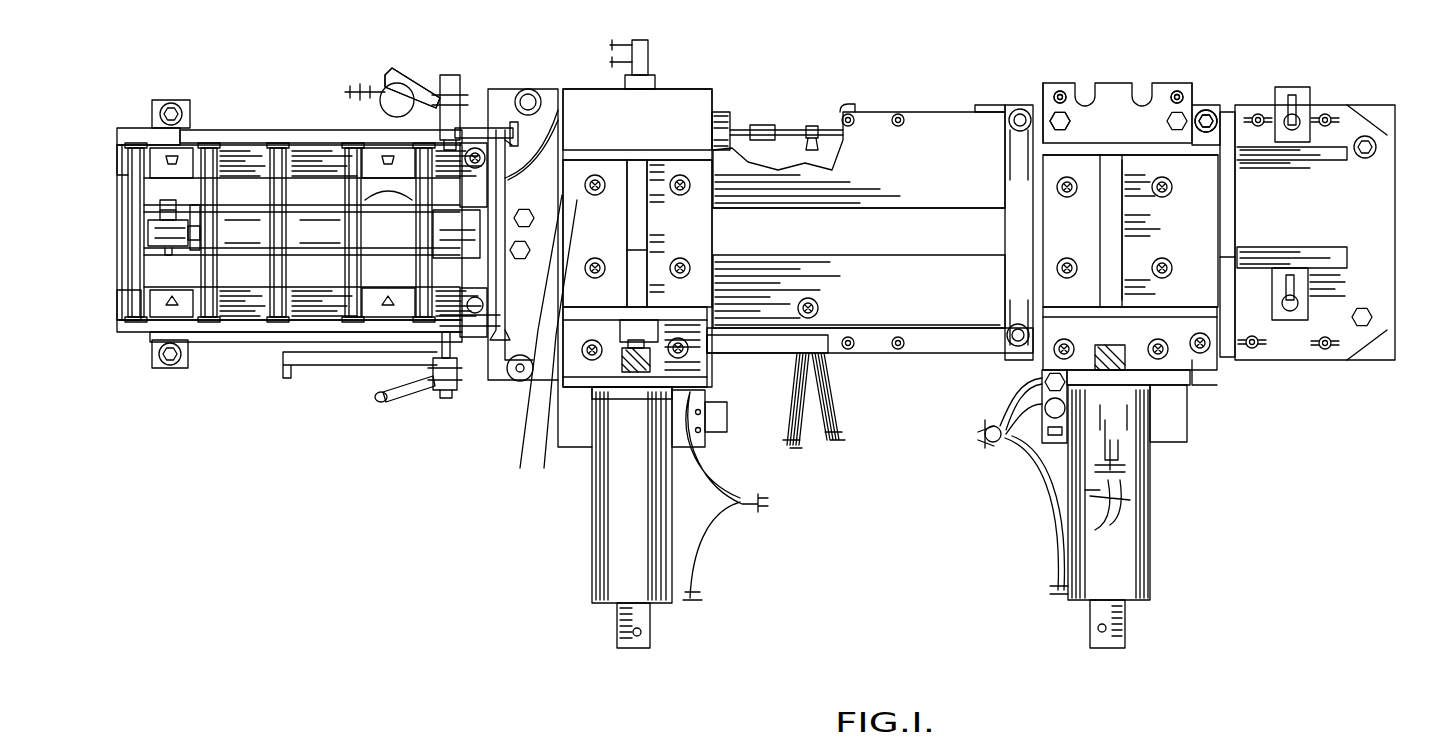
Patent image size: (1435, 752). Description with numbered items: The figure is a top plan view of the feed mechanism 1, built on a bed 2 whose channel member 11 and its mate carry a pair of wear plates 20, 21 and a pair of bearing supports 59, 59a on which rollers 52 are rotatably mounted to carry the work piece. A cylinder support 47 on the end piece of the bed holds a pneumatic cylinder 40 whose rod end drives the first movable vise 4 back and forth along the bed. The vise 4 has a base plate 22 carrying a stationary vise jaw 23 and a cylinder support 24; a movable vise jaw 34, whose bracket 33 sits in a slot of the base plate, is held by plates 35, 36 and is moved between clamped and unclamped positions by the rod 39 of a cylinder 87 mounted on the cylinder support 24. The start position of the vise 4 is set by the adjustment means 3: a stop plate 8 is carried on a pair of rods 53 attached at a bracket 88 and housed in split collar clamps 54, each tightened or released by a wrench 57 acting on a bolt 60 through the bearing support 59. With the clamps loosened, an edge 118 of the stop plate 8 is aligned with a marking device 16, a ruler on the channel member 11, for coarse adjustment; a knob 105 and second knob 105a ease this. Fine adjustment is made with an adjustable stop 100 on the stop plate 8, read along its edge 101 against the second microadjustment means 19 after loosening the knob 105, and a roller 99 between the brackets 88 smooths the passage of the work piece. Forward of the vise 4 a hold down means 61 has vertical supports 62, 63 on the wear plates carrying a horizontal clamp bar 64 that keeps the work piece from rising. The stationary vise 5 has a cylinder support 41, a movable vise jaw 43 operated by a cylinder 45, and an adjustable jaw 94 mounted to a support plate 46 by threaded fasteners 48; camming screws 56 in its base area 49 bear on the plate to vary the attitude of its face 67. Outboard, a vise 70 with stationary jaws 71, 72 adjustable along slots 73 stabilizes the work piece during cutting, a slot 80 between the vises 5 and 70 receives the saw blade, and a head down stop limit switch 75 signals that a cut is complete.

The feed mechanism 1 is at (1060, 60).
The bed 2 is at (163, 128).
The adjustment means 3 is at (432, 70).
The first movable vise 4 is at (690, 118).
The stationary vise 5 is at (1168, 45).
The stop plate 8 is at (498, 98).
The channel member 11 is at (876, 352).
The marking device 16 is at (732, 345).
The second microadjustment means 19 is at (500, 300).
The wear plate 20 is at (859, 156).
The wear plate 21 is at (859, 291).
The base plate 22 is at (732, 128).
The stationary vise jaw 23 is at (640, 155).
The cylinder support 24 is at (614, 392).
The bracket 33 is at (642, 268).
The movable vise jaw 34 is at (688, 295).
The plate 35 is at (679, 233).
The plate 36 is at (595, 233).
The rod 39 is at (632, 345).
The cylinder 40 is at (274, 230).
The cylinder support 41 is at (1182, 378).
The movable vise jaw 43 is at (1213, 345).
The cylinder 45 is at (1128, 543).
The support plate 46 is at (1110, 175).
The cylinder support 47 is at (150, 214).
The threaded fastener 48 is at (1052, 106).
The base area 49 is at (1101, 95).
The roller 52 is at (212, 148).
The rod 53 is at (236, 132).
The clamp 54 is at (463, 130).
The camming screw 56 is at (1058, 92).
The wrench 57 is at (420, 72).
The bearing support 59 is at (124, 334).
The bearing support 59a is at (150, 128).
The bolt 60 is at (446, 315).
The hold down means 61 is at (972, 100).
The vertical support 62 is at (1019, 108).
The vertical support 63 is at (1016, 347).
The clamp bar 64 is at (1015, 190).
The face 67 is at (1170, 178).
The vise 70 is at (1338, 125).
The stationary jaw 71 is at (1376, 158).
The stationary jaw 72 is at (1340, 262).
The slot 73 is at (1293, 95).
The head down stop limit switch 75 is at (1032, 440).
The slot 80 is at (1229, 110).
The cylinder 87 is at (632, 517).
The bracket 88 is at (533, 100).
The vise jaw 94 is at (1130, 140).
The roller 99 is at (536, 142).
The adjustable stop 100 is at (545, 222).
The edge 101 is at (536, 395).
The knob 105 is at (518, 380).
The second knob 105a is at (512, 140).
The edge 118 is at (544, 440).